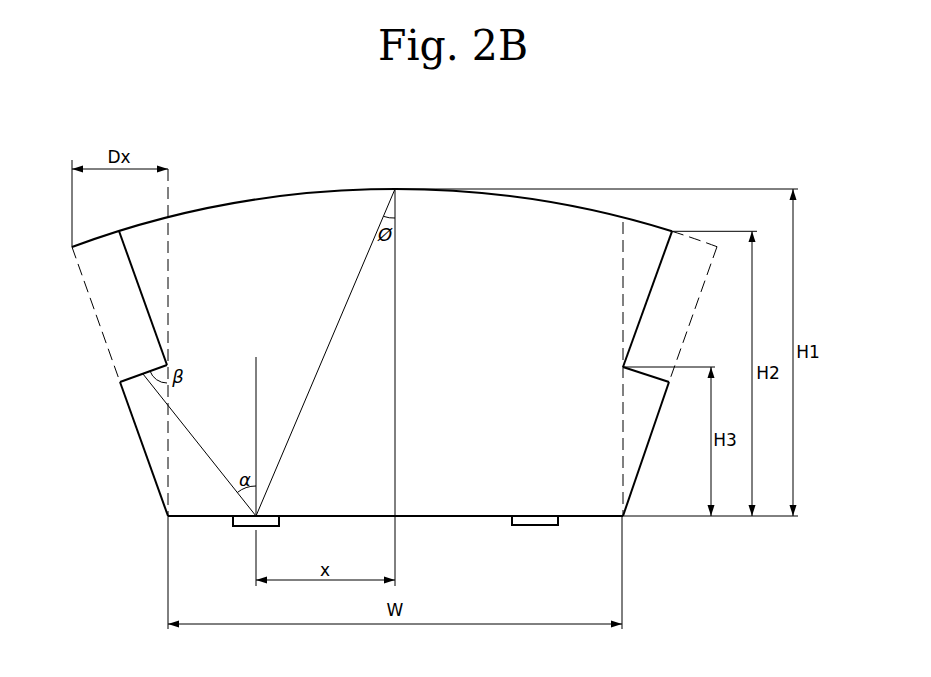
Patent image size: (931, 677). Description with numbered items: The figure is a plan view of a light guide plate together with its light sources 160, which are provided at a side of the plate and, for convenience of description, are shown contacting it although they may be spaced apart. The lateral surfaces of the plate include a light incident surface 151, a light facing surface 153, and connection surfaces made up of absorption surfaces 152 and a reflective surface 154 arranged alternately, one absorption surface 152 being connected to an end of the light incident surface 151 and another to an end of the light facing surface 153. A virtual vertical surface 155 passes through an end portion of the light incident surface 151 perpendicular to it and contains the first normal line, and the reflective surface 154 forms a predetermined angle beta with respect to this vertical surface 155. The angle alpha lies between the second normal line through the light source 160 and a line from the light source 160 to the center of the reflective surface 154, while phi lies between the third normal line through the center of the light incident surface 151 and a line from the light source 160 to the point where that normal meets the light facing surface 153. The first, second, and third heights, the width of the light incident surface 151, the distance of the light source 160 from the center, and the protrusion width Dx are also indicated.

The light incident surface 151 is at (460, 518).
The absorption surface 152 is at (142, 445).
The light facing surface 153 is at (268, 194).
The reflective surface 154 is at (137, 372).
The vertical surface 155 is at (623, 258).
The light source 160 is at (245, 528).